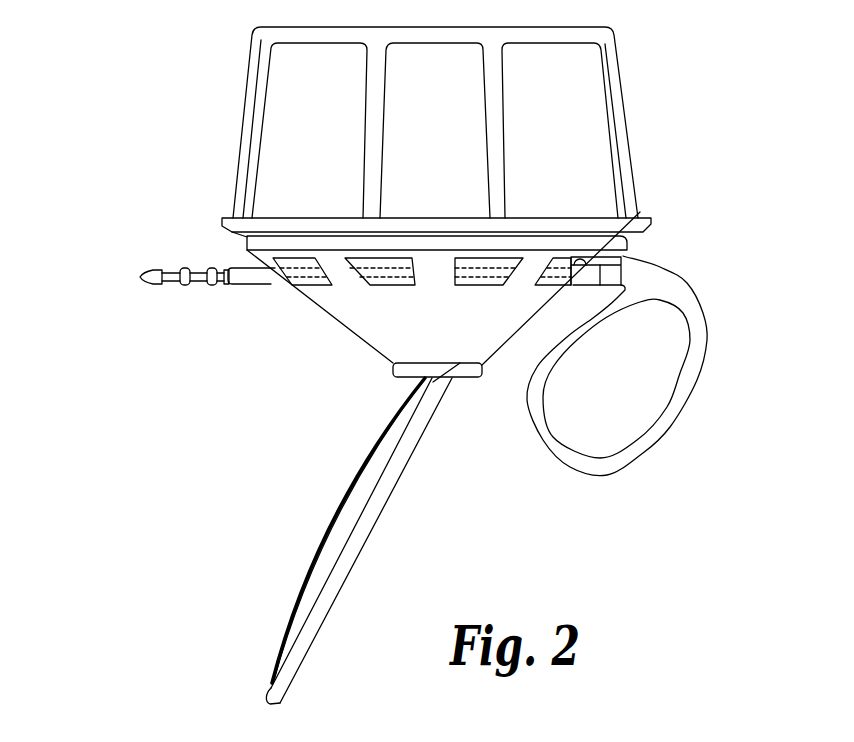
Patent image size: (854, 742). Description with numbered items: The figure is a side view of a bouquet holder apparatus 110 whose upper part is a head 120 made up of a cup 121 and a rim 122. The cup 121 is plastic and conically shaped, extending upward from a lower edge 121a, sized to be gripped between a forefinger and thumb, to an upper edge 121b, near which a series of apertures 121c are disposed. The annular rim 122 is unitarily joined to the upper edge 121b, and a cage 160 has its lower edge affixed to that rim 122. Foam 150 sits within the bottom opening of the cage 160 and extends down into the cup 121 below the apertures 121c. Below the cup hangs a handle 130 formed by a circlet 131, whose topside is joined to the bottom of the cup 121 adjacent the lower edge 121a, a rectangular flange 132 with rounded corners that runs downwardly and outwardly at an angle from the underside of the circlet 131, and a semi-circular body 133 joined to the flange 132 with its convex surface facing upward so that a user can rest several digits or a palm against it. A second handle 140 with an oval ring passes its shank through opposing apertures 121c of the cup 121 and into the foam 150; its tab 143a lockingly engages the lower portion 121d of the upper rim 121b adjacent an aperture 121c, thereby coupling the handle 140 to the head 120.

The bouquet holder apparatus 110 is at (134, 111).
The head 120 is at (290, 353).
The cup 121 is at (341, 325).
The lower edge 121a is at (393, 378).
The upper edge 121b is at (247, 245).
The apertures 121c is at (297, 285).
The lower portion of upper rim 121d is at (640, 212).
The rim 122 is at (222, 226).
The handle 130 is at (384, 561).
The circlet 131 is at (482, 380).
The flange 132 is at (407, 447).
The body 133 is at (317, 578).
The handle 140 is at (691, 442).
The tab 143a is at (620, 255).
The foam 150 is at (594, 130).
The cage 160 is at (620, 63).